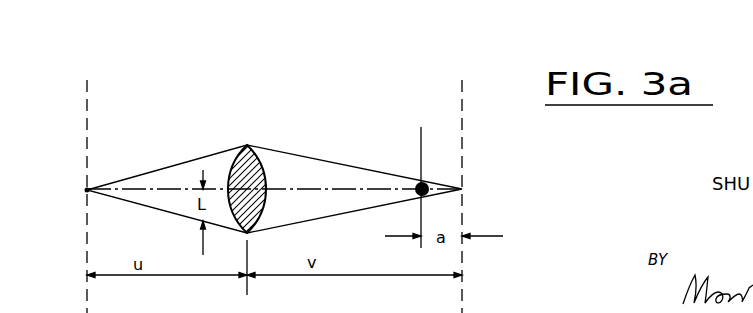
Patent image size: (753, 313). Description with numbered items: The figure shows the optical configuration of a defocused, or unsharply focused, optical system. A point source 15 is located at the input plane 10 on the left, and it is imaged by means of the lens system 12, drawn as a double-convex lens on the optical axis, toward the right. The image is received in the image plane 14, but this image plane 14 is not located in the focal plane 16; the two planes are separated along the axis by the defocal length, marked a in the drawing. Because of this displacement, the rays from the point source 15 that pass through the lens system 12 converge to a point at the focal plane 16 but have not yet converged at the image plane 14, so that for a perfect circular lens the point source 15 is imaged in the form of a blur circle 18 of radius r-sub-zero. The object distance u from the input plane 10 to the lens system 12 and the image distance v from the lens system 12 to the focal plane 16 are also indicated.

The input plane 10 is at (104, 56).
The lens system 12 is at (263, 168).
The image plane 14 is at (421, 147).
The point source 15 is at (87, 190).
The focal plane 16 is at (487, 53).
The blur circle 18 is at (417, 194).